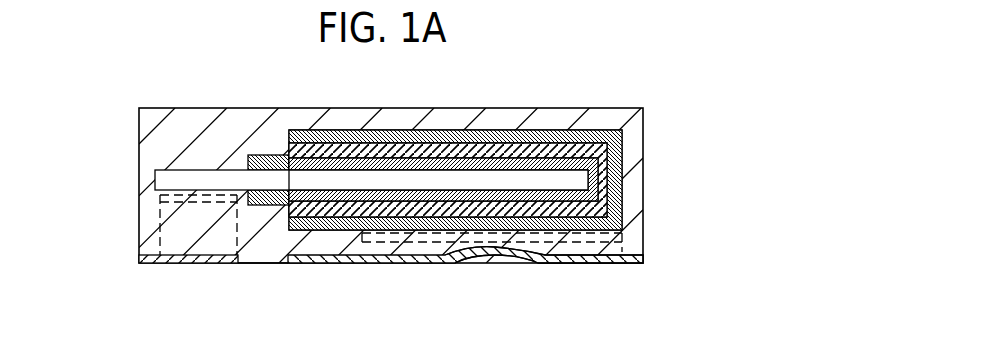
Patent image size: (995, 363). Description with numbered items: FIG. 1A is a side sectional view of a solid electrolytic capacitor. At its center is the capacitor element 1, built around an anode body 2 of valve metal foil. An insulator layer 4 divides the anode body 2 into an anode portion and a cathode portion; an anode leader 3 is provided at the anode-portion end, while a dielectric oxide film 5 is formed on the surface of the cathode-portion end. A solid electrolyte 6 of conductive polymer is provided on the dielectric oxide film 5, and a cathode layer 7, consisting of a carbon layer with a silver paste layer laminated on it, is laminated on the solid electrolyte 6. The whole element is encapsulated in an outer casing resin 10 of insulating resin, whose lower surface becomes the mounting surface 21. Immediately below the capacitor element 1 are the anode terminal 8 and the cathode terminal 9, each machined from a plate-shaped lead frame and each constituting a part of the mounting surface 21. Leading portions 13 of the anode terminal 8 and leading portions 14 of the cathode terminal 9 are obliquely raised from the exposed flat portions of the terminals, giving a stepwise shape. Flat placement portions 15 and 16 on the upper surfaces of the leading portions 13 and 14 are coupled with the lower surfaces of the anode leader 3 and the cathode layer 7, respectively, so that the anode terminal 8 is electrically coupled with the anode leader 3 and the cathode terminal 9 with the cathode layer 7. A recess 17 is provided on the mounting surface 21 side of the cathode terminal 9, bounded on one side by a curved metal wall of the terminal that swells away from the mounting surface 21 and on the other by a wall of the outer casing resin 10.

The capacitor element 1 is at (622, 160).
The anode body 2 is at (395, 175).
The anode leader 3 is at (207, 175).
The insulator layer 4 is at (267, 157).
The dielectric oxide film 5 is at (456, 152).
The solid electrolyte 6 is at (525, 148).
The cathode layer 7 is at (583, 135).
The anode terminal 8 is at (172, 258).
The cathode terminal 9 is at (607, 257).
The outer casing resin 10 is at (162, 148).
The leading portion 13 is at (197, 233).
The leading portion 14 is at (382, 248).
The placement portion 15 is at (158, 202).
The placement portion 16 is at (623, 238).
The recess 17 is at (493, 258).
The mounting surface 21 is at (267, 263).